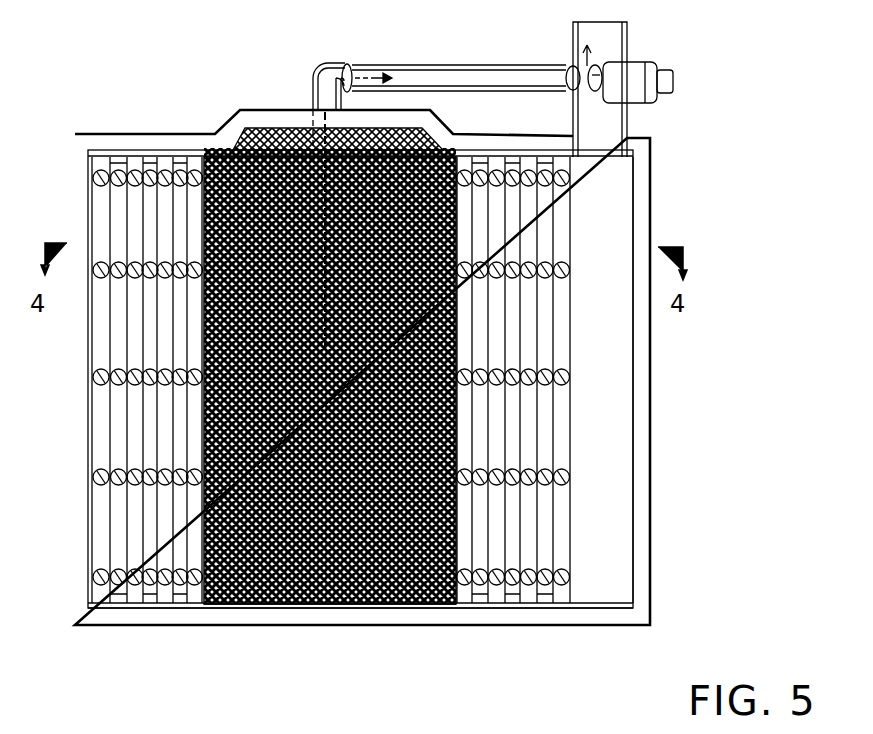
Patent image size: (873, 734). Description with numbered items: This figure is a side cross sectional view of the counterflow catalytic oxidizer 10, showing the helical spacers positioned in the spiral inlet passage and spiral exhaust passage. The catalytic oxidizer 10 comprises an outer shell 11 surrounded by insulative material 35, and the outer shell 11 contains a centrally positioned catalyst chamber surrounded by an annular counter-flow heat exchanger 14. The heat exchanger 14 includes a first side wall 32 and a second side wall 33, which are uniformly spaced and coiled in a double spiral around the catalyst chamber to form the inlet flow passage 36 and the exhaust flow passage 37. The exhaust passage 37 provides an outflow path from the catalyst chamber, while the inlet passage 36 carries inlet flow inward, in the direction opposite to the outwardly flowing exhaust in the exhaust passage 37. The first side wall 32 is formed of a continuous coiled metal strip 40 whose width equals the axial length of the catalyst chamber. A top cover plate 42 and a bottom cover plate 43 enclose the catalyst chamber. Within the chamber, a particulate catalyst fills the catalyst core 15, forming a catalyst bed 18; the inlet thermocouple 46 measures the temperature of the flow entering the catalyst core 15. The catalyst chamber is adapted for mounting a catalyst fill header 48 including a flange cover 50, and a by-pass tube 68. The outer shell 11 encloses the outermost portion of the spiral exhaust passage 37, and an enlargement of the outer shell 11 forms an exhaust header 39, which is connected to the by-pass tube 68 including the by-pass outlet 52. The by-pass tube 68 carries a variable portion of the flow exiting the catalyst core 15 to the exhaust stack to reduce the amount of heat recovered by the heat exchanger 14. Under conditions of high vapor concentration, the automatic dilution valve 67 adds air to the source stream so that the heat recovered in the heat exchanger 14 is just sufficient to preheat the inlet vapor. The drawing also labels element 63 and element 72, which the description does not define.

The counterflow catalytic oxidizer 10 is at (662, 480).
The outer shell 11 is at (90, 442).
The counter-flow heat exchanger 14 is at (133, 325).
The catalyst core 15 is at (350, 604).
The catalyst bed 18 is at (225, 212).
The first side wall 32 is at (107, 517).
The second side wall 33 is at (88, 552).
The insulative material 35 is at (642, 210).
The inlet flow passage 36 is at (164, 244).
The exhaust flow passage 37 is at (167, 445).
The exhaust header 39 is at (608, 364).
The continuous coiled metal strip 40 is at (115, 160).
The top cover plate 42 is at (132, 152).
The bottom cover plate 43 is at (262, 612).
The inlet thermocouple 46 is at (303, 304).
The catalyst fill header 48 is at (438, 131).
The flange cover 50 is at (280, 127).
The by-pass outlet 52 is at (313, 88).
The outlet tube 63 is at (593, 305).
The automatic dilution valve 67 is at (635, 108).
The by-pass tube 68 is at (410, 77).
The end plate 72 is at (180, 160).